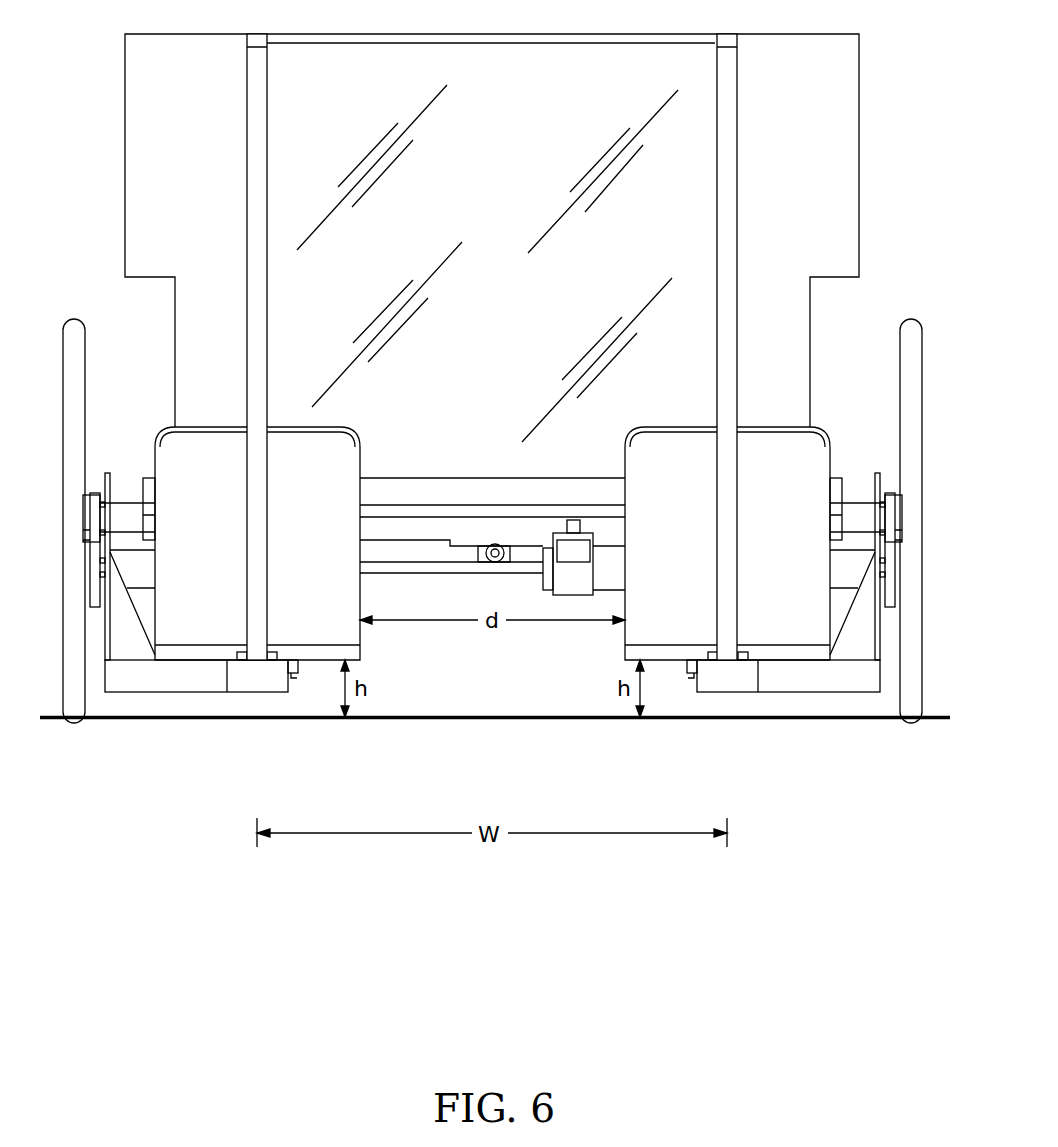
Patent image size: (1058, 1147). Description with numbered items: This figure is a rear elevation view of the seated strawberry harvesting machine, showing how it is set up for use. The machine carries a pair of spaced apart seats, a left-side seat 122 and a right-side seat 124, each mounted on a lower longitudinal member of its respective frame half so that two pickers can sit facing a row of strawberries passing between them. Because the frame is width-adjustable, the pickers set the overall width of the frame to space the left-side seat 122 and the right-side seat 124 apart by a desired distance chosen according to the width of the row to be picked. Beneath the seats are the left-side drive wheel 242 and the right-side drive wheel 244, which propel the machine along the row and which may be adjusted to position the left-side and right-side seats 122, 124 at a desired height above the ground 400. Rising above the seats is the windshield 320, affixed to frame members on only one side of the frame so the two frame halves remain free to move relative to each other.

The windshield 320 is at (832, 145).
The left-side drive wheel 242 is at (76, 373).
The right-side drive wheel 244 is at (910, 360).
The left-side seat 122 is at (192, 617).
The right-side seat 124 is at (793, 617).
The ground 400 is at (507, 717).